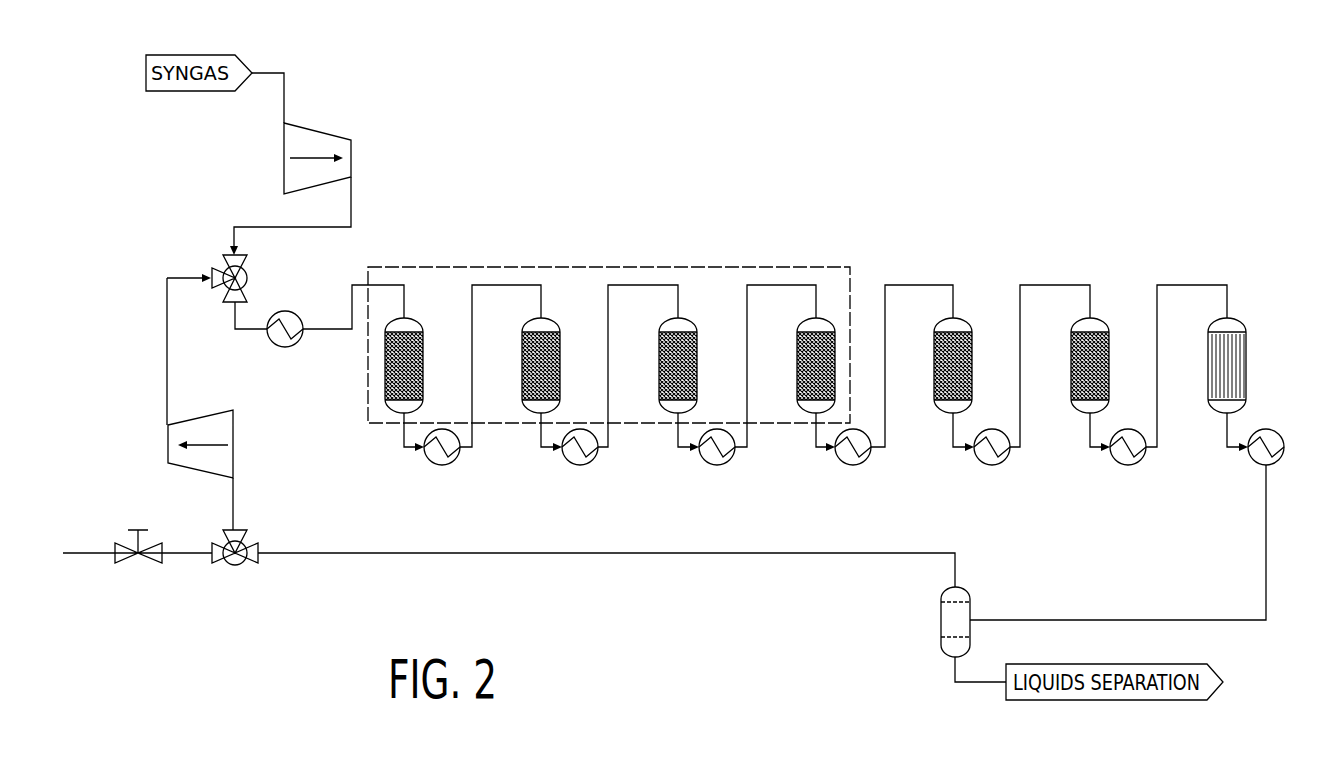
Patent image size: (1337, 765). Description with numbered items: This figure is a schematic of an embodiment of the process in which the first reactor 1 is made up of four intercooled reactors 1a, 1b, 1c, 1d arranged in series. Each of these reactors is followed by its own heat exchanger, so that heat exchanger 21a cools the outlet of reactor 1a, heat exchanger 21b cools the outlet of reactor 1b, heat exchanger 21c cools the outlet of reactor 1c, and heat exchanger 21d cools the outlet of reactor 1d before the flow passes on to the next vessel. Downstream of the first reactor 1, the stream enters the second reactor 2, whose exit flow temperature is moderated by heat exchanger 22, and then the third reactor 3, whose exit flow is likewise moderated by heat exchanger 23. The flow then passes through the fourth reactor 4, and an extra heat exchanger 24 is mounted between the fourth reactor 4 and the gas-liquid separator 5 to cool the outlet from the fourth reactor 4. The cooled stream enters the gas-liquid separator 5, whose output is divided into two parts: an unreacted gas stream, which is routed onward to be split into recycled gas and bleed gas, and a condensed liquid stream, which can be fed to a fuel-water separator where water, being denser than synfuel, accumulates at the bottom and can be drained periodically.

The first reactor 1 is at (368, 397).
The intercooled reactor 1a is at (430, 311).
The intercooled reactor 1b is at (567, 311).
The intercooled reactor 1c is at (704, 311).
The intercooled reactor 1d is at (810, 319).
The second reactor 2 is at (957, 321).
The third reactor 3 is at (1093, 321).
The fourth reactor 4 is at (1239, 321).
The gas-liquid separator 5 is at (970, 598).
The heat exchanger 21a is at (455, 460).
The heat exchanger 21b is at (593, 460).
The heat exchanger 21c is at (730, 460).
The heat exchanger 21d is at (866, 460).
The heat exchanger 22 is at (1005, 460).
The heat exchanger 23 is at (1141, 460).
The heat exchanger 24 is at (1280, 459).